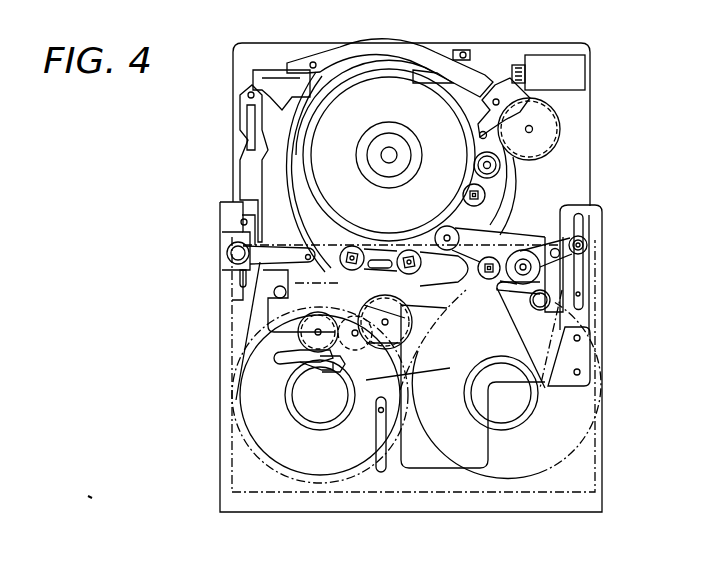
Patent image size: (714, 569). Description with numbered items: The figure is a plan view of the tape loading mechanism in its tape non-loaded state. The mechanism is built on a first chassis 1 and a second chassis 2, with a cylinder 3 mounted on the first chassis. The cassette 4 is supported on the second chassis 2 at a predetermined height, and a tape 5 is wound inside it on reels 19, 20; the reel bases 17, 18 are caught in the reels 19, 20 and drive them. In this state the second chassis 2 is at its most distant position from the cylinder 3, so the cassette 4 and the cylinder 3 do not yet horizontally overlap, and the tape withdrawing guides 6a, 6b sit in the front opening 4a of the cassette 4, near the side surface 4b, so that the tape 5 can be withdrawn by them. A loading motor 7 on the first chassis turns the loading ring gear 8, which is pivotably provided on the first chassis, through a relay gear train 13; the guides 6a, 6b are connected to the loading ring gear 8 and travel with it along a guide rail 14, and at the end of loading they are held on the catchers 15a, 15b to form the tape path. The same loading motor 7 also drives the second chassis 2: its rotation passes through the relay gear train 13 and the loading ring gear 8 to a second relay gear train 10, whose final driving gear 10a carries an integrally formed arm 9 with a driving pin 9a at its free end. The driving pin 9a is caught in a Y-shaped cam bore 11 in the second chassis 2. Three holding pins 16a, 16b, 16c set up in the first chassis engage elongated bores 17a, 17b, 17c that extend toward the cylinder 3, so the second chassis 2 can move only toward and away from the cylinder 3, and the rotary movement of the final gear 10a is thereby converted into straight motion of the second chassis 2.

The first chassis 1 is at (276, 43).
The second chassis 2 is at (602, 502).
The cylinder 3 is at (391, 72).
The cassette 4 is at (602, 466).
The front opening 4a is at (450, 300).
The side surface 4b is at (432, 338).
The tape 5 is at (522, 240).
The tape withdrawing guide 6a is at (354, 246).
The tape withdrawing guide 6b is at (410, 249).
The loading motor 7 is at (553, 55).
The loading ring gear 8 is at (515, 183).
The arm 9 is at (305, 372).
The driving pin 9a is at (326, 378).
The relay gear train 10 is at (370, 342).
The final driving gear 10a is at (305, 322).
The cam bore 11 is at (278, 365).
The relay gear train 13 is at (565, 118).
The guide rail 14 is at (243, 167).
The catcher 15a is at (465, 50).
The catcher 15b is at (253, 78).
The holding pin 16a is at (238, 226).
The holding pin 16b is at (386, 406).
The holding pin 16c is at (590, 216).
The reel base 17 is at (538, 390).
The elongated bore 17a is at (240, 280).
The elongated bore 17b is at (382, 472).
The elongated bore 17c is at (584, 291).
The reel base 18 is at (315, 412).
The reel 19 is at (510, 485).
The reel 20 is at (242, 434).